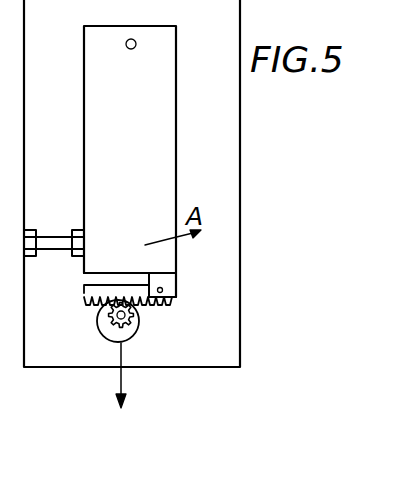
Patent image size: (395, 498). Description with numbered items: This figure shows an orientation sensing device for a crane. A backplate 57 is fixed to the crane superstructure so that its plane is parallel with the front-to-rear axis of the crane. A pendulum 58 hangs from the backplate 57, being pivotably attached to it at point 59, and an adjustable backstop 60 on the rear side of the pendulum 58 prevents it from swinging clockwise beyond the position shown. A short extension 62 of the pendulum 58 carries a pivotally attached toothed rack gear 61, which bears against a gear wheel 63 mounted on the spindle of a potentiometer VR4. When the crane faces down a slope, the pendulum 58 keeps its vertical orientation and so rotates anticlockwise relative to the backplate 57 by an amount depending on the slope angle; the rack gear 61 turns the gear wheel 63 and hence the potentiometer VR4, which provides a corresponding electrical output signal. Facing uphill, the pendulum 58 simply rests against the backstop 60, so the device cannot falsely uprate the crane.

The backplate 57 is at (217, 171).
The pendulum 58 is at (141, 180).
The pivot point 59 is at (133, 49).
The adjustable backstop 60 is at (52, 225).
The toothed rack gear 61 is at (88, 292).
The short extension 62 is at (166, 289).
The gear wheel 63 is at (108, 313).
The potentiometer VR4 is at (141, 313).